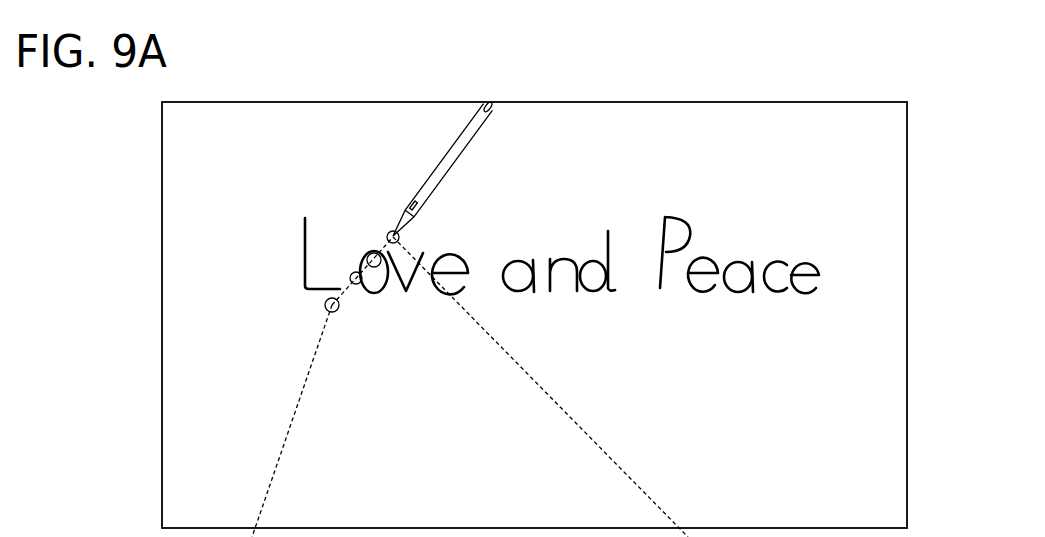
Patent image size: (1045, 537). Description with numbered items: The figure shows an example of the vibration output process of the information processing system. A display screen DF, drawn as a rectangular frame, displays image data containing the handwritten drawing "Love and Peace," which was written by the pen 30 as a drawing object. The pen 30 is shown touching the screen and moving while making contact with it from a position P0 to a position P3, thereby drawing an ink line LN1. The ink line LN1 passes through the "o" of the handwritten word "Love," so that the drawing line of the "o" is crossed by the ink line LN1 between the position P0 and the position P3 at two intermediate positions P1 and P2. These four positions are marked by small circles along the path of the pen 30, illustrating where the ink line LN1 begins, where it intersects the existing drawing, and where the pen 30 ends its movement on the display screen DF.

The display screen DF is at (770, 101).
The ink line LN1 is at (341, 289).
The position P0 is at (325, 308).
The position P1 is at (356, 285).
The position P2 is at (377, 267).
The position P3 is at (391, 230).
The pen 30 is at (455, 164).